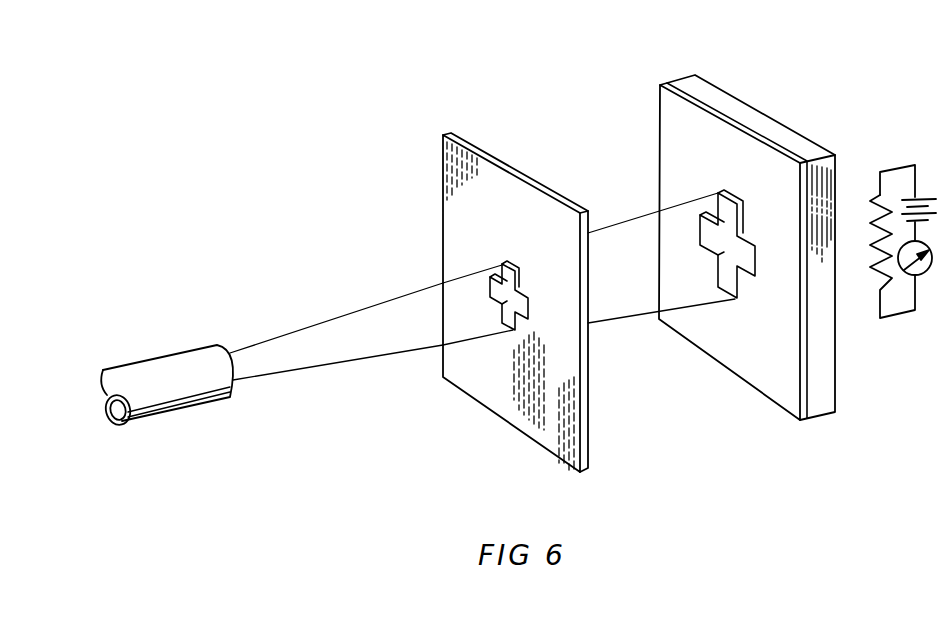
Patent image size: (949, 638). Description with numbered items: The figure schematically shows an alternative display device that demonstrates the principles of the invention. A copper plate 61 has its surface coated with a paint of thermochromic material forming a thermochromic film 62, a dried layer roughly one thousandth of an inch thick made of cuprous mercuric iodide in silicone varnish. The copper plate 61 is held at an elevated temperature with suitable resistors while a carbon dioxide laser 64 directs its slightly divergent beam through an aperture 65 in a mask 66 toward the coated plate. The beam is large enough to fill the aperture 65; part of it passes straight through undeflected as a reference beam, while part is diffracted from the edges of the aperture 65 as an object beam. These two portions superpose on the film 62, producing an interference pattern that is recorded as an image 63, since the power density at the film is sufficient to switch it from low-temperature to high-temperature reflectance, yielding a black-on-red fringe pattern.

The copper plate 61 is at (683, 78).
The thermochromic film 62 is at (661, 83).
The image 63 is at (727, 197).
The carbon dioxide laser 64 is at (141, 358).
The aperture 65 is at (508, 263).
The mask 66 is at (490, 161).